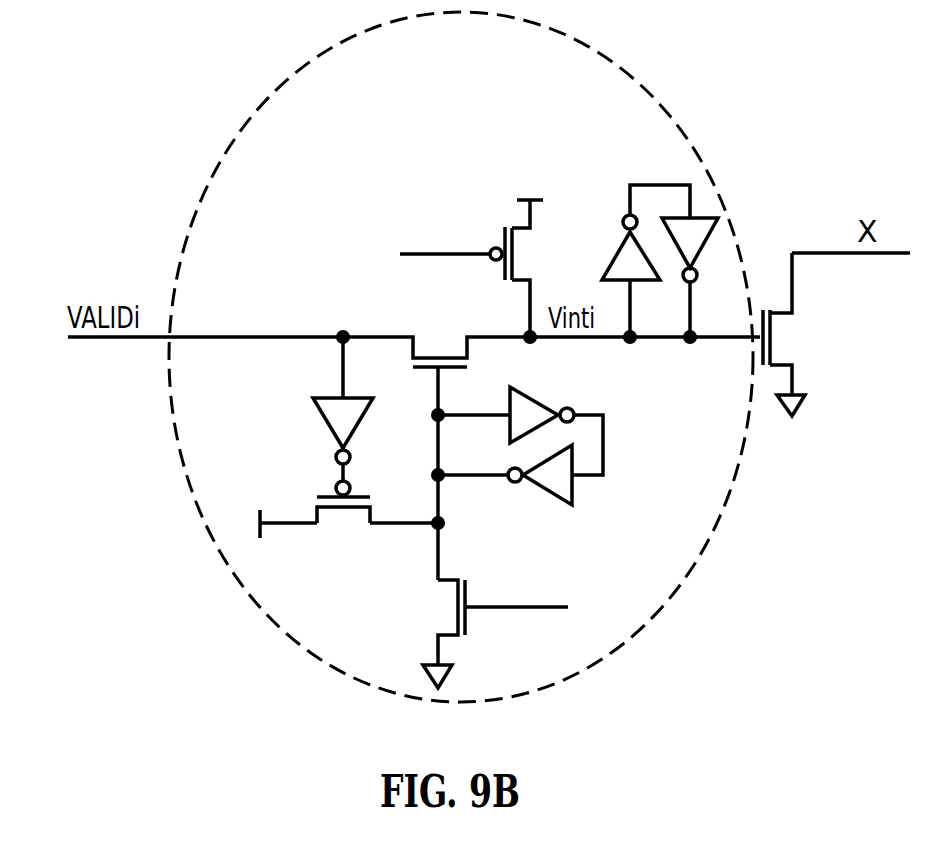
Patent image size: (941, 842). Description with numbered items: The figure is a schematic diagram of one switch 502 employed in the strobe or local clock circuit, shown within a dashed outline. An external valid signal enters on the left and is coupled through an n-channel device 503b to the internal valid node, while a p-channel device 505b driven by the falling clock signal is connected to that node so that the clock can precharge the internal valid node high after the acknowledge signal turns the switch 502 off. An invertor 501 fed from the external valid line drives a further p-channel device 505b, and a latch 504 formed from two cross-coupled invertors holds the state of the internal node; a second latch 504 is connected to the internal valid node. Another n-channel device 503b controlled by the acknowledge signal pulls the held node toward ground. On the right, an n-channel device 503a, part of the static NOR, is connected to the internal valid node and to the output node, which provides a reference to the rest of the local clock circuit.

The invertor 501 is at (322, 428).
The switch 502 is at (652, 83).
The n-channel device 503a is at (788, 337).
The n-channel device 503b is at (437, 347).
The latch 504 is at (664, 179).
The p-channel device 505b is at (528, 253).